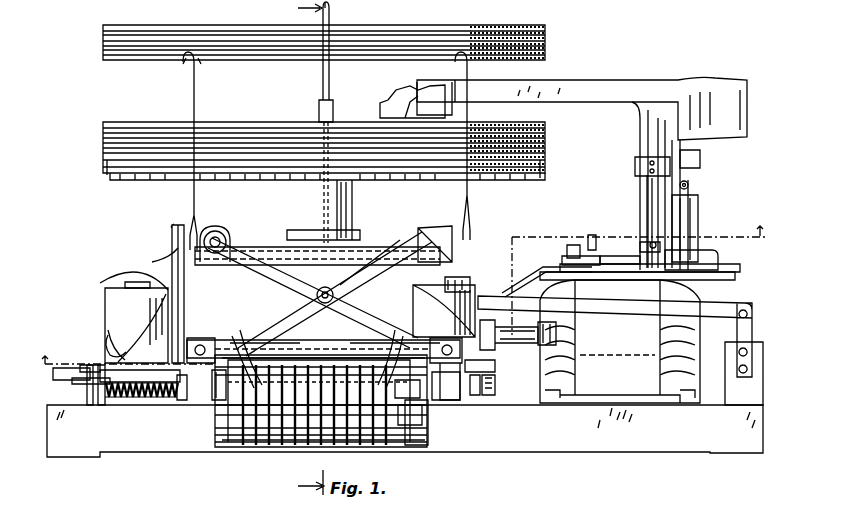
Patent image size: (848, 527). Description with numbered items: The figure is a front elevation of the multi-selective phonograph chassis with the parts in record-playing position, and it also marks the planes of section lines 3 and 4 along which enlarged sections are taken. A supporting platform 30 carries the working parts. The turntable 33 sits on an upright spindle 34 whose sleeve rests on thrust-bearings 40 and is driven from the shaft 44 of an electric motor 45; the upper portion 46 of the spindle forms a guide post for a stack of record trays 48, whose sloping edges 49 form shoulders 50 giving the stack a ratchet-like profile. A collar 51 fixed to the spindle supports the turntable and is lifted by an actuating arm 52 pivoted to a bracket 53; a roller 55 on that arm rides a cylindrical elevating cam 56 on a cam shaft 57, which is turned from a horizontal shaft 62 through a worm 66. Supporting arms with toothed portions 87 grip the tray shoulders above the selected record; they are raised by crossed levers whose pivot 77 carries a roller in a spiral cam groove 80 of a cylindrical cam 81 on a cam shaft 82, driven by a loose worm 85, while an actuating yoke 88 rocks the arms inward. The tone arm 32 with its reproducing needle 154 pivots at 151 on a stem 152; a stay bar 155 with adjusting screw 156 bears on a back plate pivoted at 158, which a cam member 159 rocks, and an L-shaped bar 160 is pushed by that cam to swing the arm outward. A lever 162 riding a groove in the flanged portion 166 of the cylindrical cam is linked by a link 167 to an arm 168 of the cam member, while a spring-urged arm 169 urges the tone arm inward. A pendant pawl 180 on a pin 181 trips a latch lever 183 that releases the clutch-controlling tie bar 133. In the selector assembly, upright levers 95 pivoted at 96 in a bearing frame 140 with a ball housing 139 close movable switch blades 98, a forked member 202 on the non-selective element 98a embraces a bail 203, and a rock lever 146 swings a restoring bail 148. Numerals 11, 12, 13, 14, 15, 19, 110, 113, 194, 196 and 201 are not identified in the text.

The section line 3— 3 is at (396, 301).
The section line 4— 4 is at (298, 249).
The upper frame rail 11 is at (255, 246).
The pivot 12 is at (213, 266).
The link arm 13 is at (272, 302).
The link arm 14 is at (340, 310).
The end block 15 is at (204, 345).
The spring wire 19 is at (140, 268).
The supporting platform 30 is at (405, 431).
The tone arm 32 is at (620, 90).
The turntable 33 is at (116, 180).
The spindle 34 is at (305, 307).
The thrust-bearings 40 is at (195, 95).
The motor shaft 44 is at (528, 333).
The electric motor 45 is at (617, 345).
The spindle upper portion 46 is at (331, 70).
The record trays 48 is at (287, 122).
The sloping tray edge 49 is at (105, 33).
The tray shoulders 50 is at (105, 143).
The collar 51 is at (354, 206).
The actuating arm 52 is at (610, 300).
The bracket 53 is at (752, 326).
The roller 55 is at (455, 290).
The cylindrical elevating cam 56 is at (444, 311).
The cam shaft 57 is at (443, 278).
The horizontal shaft 62 is at (183, 400).
The worm 66 is at (496, 392).
The pivot 77 is at (186, 300).
The cam groove 80 is at (105, 334).
The cylindrical cam 81 is at (136, 325).
The cam shaft 82 is at (125, 284).
The worm 85 is at (150, 398).
The toothed record-engaging portions 87 is at (184, 62).
The actuating yoke 88 is at (338, 288).
The upright lever 95 is at (248, 448).
The lever pivot 96 is at (410, 445).
The movable switch blade 98 is at (244, 351).
The non-selective switch element 98a is at (394, 351).
The plate 110 is at (690, 278).
The bracket 113 is at (634, 166).
The clutch-controlling tie bar 133 is at (58, 380).
The housing 139 is at (335, 336).
The bearing frame 140 is at (232, 430).
The rock lever 146 is at (212, 392).
The bail 148 is at (323, 342).
The pivot 151 is at (672, 210).
The stem 152 is at (701, 158).
The reproducing needle 154 is at (412, 118).
The stay bar 155 is at (646, 186).
The adjusting screw 156 is at (640, 246).
The back plate pivot 158 is at (690, 184).
The cam member 159 is at (692, 230).
The L-shaped bar 160 is at (645, 208).
The horizontally-swinging lever 162 is at (95, 364).
The lower flanged portion 166 is at (110, 398).
The link 167 is at (735, 272).
The arm 168 is at (719, 262).
The horizontally-swinging arm 169 is at (620, 254).
The pendant pawl 180 is at (566, 246).
The pin 181 is at (576, 240).
The horizontally-swinging lever 183 is at (548, 276).
The shaft 194 is at (509, 327).
The contact 196 is at (496, 372).
The bracket 201 is at (442, 400).
The forked member 202 is at (418, 395).
The bail 203 is at (412, 420).